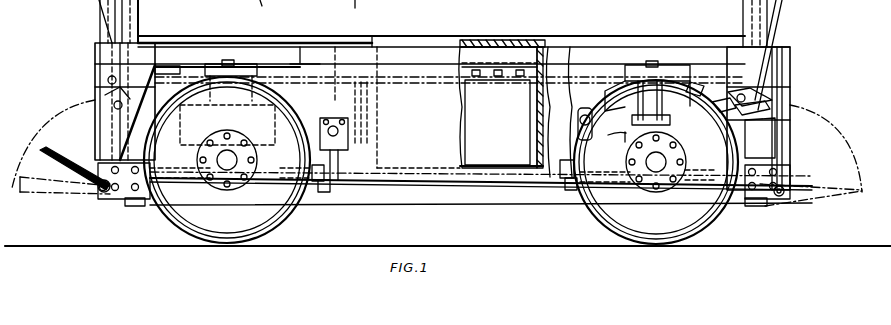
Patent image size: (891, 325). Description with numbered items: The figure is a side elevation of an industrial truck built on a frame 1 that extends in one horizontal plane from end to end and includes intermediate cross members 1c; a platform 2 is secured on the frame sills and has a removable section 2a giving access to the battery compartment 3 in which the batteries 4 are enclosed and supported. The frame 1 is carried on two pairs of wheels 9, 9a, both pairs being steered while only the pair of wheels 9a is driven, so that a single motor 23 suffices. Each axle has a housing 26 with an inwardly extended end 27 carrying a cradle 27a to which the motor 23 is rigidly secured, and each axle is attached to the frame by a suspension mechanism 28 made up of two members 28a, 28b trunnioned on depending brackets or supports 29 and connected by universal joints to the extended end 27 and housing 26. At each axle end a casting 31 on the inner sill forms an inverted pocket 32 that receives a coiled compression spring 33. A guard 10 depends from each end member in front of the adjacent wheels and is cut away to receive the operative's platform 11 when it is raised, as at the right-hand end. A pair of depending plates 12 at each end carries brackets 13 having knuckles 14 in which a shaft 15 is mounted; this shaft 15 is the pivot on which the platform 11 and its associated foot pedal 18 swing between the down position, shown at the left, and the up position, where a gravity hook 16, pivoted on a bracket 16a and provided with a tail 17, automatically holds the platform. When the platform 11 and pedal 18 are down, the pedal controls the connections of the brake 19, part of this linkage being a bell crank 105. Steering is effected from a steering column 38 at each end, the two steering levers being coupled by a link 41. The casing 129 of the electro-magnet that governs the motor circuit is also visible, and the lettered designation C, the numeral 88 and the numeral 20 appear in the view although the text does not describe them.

The frame 1 is at (441, 23).
The body compartment C is at (347, 5).
The body part 88 is at (248, 5).
The depending brackets or supports 29 is at (267, 68).
The motor 23 is at (326, 69).
The bell crank 105 is at (160, 67).
The guard 10 is at (95, 140).
The operative's platform 11 is at (40, 189).
The foot pedal 18 is at (72, 152).
The gravity operating hook 16 is at (95, 107).
The tail 17 is at (748, 90).
The bracket 16a is at (716, 101).
The plates 12 is at (777, 141).
The brackets 13 is at (126, 200).
The shaft 15 is at (100, 195).
The knuckles 14 is at (780, 196).
The wheels 9 is at (166, 218).
The wheels 9a is at (712, 220).
The housing 26 is at (230, 214).
The suspension member 28b is at (232, 62).
The steering column 38 is at (136, 30).
The upright 20 is at (98, 8).
The electro-magnet 129 is at (92, 28).
The cradle 27a is at (320, 123).
The extended end 27 is at (314, 212).
The brake 19 is at (368, 114).
The suspension mechanism 28 is at (481, 188).
The link 41 is at (446, 208).
The suspension member 28a is at (349, 192).
The batteries 4 is at (498, 107).
The battery compartment 3 is at (535, 104).
The removable section 2a is at (508, 40).
The intermediate cross members 1c is at (560, 46).
The platform 2 is at (609, 38).
The casting 31 is at (629, 74).
The inverted pocket 32 is at (682, 72).
The coiled compression spring 33 is at (626, 142).